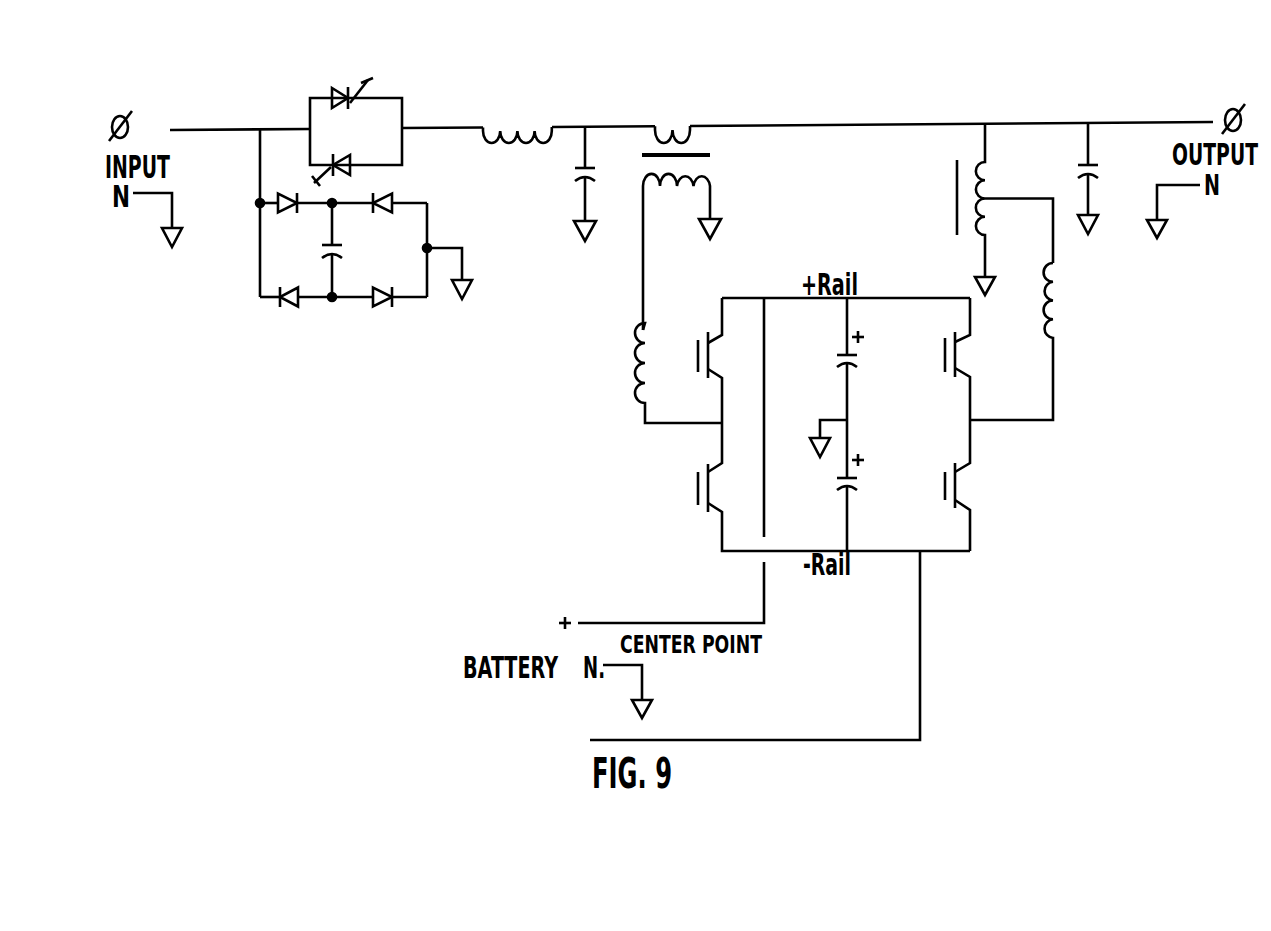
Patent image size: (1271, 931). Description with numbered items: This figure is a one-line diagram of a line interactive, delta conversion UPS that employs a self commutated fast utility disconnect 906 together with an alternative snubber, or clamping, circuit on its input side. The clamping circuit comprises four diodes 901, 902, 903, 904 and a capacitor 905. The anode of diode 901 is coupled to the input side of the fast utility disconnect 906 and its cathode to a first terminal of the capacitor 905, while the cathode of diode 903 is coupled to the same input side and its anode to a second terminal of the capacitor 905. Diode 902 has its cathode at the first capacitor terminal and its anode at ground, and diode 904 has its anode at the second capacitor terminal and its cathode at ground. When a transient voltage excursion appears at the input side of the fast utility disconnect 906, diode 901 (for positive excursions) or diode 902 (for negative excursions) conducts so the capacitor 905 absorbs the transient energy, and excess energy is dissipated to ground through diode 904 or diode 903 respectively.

The diode 901 is at (284, 187).
The diode 902 is at (401, 190).
The diode 903 is at (286, 318).
The diode 904 is at (390, 318).
The capacitor 905 is at (366, 250).
The fast utility disconnect 906 is at (364, 79).